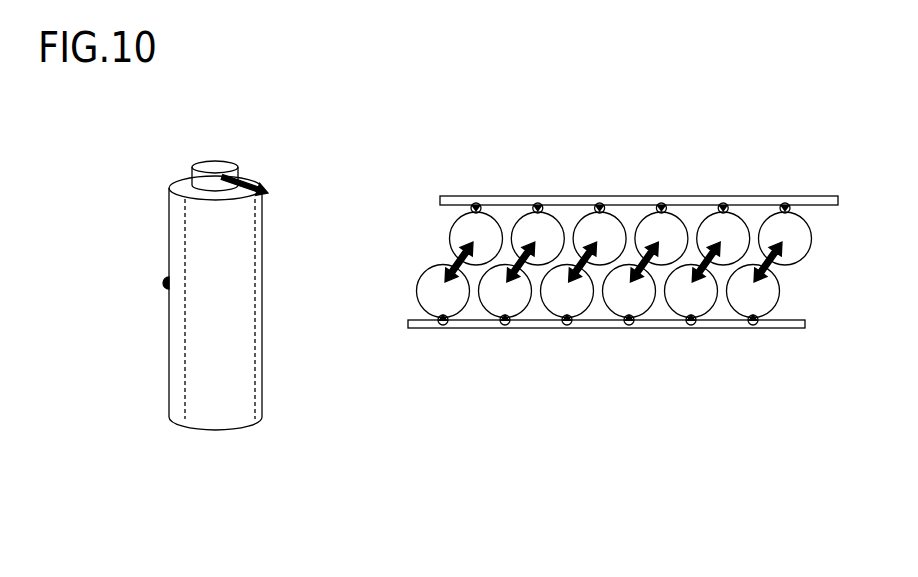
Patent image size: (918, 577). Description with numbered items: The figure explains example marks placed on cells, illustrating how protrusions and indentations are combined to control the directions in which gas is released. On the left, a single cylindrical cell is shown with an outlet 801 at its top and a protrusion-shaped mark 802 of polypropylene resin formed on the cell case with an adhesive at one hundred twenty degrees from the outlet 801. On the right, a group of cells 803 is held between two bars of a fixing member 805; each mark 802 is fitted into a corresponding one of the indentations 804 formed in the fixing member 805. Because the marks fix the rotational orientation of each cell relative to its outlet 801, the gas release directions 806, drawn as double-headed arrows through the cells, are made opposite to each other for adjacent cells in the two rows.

The outlet 801 is at (221, 158).
The protrusion-shaped mark 802 is at (157, 271).
The battery cell 803 is at (436, 304).
The indentation 804 is at (435, 334).
The fixing member 805 is at (482, 327).
The gas release direction 806 is at (638, 268).